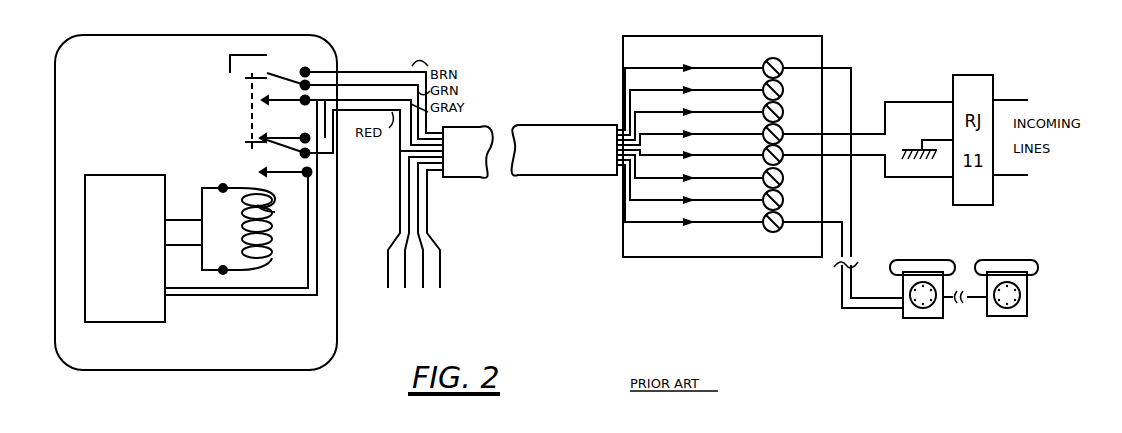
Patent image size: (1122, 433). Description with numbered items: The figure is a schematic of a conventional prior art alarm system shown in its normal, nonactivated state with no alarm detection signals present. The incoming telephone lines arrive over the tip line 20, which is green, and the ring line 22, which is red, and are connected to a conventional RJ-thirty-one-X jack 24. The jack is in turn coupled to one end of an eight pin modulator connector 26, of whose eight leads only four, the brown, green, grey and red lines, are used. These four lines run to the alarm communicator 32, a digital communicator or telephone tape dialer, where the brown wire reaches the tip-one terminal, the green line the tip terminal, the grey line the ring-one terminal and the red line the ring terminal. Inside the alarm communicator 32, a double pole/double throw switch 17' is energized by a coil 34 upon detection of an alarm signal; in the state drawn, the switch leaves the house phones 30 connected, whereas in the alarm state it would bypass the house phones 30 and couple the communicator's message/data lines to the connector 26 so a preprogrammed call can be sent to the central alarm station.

The double pole/double throw switch 17' is at (242, 112).
The tip line 20 is at (927, 100).
The ring line 22 is at (888, 178).
The RJ31X jack 24 is at (766, 258).
The eight pin modulator connector 26 is at (570, 167).
The house phones 30 is at (893, 325).
The alarm communicator 32 is at (258, 347).
The coil 34 is at (238, 229).